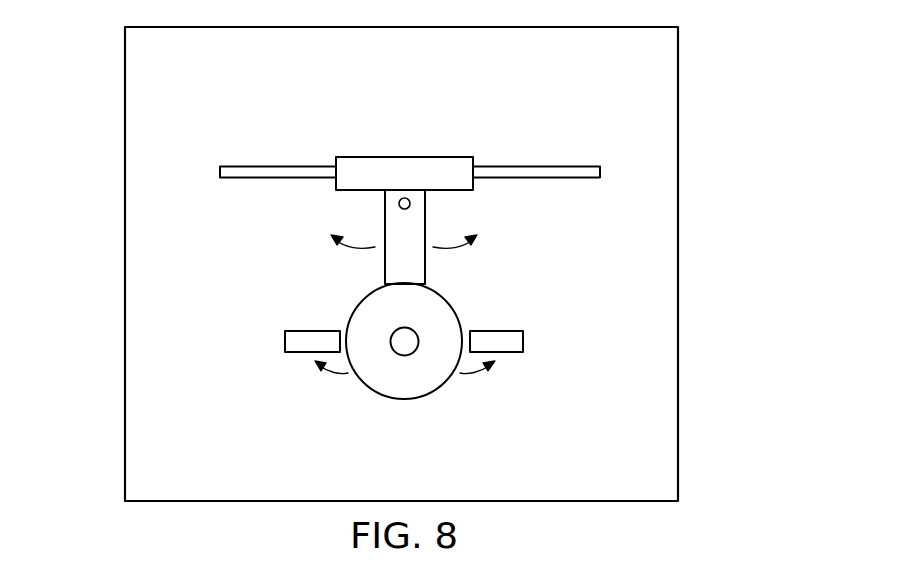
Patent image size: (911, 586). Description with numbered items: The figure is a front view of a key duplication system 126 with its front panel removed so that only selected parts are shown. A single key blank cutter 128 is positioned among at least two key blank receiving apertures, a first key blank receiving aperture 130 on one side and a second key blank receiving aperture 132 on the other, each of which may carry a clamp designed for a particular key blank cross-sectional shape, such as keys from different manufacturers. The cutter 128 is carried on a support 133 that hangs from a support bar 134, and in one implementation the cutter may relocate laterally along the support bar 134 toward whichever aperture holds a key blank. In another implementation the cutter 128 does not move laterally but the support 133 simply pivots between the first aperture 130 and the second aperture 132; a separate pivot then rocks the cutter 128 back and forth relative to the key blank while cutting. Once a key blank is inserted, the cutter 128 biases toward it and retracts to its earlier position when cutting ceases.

The key duplication system 126 is at (681, 72).
The key blank cutter 128 is at (450, 303).
The first key blank receiving aperture 130 is at (302, 342).
The second key blank receiving aperture 132 is at (515, 342).
The support 133 is at (405, 223).
The support bar 134 is at (228, 172).